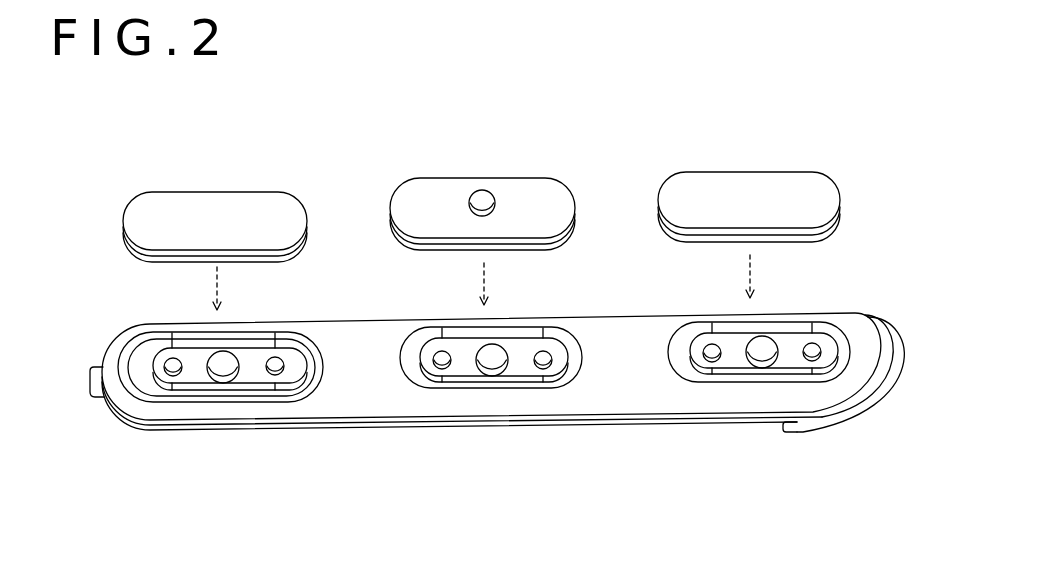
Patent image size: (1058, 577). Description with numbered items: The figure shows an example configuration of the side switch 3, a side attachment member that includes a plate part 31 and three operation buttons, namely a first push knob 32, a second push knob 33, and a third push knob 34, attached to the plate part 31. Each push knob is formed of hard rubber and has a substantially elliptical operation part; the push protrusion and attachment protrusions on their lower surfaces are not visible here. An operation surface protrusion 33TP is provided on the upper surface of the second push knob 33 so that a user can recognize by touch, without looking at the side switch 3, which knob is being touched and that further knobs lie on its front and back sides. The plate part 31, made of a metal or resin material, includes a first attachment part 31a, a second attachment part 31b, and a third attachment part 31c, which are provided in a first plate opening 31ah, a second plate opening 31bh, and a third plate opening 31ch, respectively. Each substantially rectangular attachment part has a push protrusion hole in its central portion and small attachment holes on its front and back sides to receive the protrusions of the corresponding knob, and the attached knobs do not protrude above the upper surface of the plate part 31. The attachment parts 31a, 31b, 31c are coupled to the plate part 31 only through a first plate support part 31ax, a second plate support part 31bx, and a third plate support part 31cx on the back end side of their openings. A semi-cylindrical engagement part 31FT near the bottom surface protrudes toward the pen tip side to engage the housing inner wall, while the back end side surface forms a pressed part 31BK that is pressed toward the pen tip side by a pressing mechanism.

The side switch 3 is at (603, 117).
The plate part 31 is at (357, 405).
The first attachment part 31a is at (198, 378).
The second attachment part 31b is at (465, 373).
The third attachment part 31c is at (733, 365).
The first plate opening 31ah is at (147, 365).
The second plate opening 31bh is at (412, 362).
The third plate opening 31ch is at (683, 353).
The first plate support part 31ax is at (307, 353).
The second plate support part 31bx is at (578, 342).
The third plate support part 31cx is at (842, 343).
The engagement part 31FT is at (90, 385).
The pressed part 31BK is at (898, 378).
The first push knob 32 is at (205, 205).
The second push knob 33 is at (516, 190).
The operation surface protrusion 33TP is at (480, 196).
The third push knob 34 is at (746, 183).